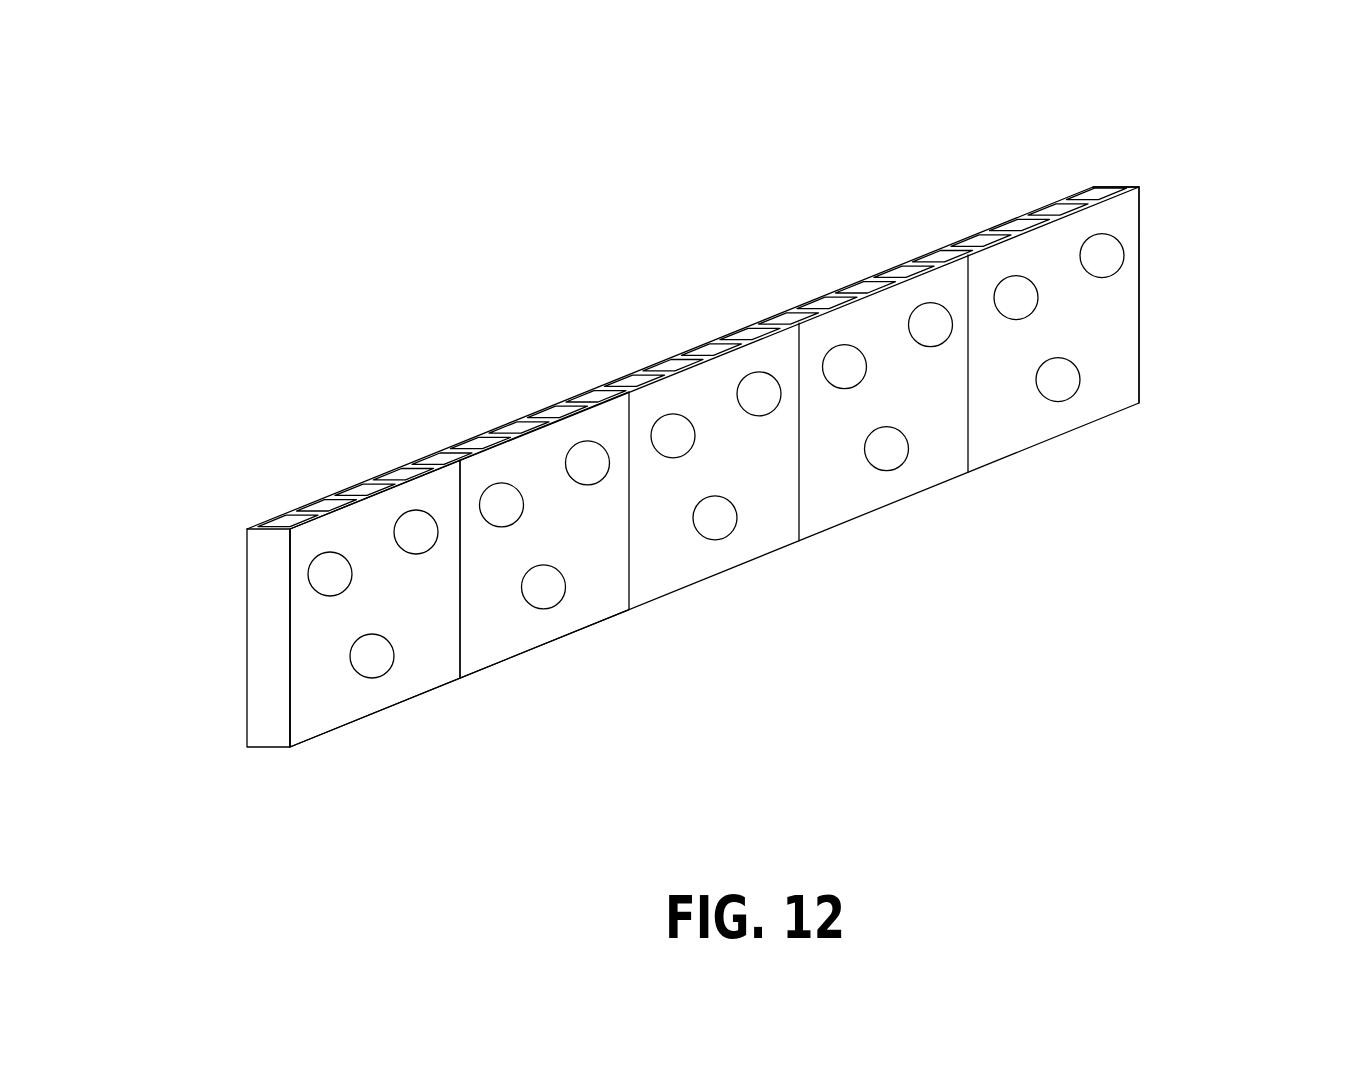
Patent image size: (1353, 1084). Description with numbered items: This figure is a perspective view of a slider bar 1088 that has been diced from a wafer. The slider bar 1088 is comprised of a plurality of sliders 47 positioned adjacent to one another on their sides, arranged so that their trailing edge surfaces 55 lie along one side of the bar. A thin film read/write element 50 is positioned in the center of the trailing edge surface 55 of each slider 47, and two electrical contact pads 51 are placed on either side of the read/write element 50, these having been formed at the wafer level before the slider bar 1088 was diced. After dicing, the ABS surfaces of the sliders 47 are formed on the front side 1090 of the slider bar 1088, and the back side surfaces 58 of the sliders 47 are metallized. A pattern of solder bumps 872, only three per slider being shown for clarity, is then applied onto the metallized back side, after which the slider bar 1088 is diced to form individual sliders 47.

The slider 47 is at (275, 640).
The thin film read/write element 50 is at (357, 503).
The electrical contact pads 51 is at (283, 518).
The trailing edge surface 55 is at (1112, 183).
The back side surface 58 is at (381, 597).
The solder bumps 872 is at (375, 662).
The slider bar 1088 is at (1143, 303).
The front side of the slider bar 1090 is at (593, 547).